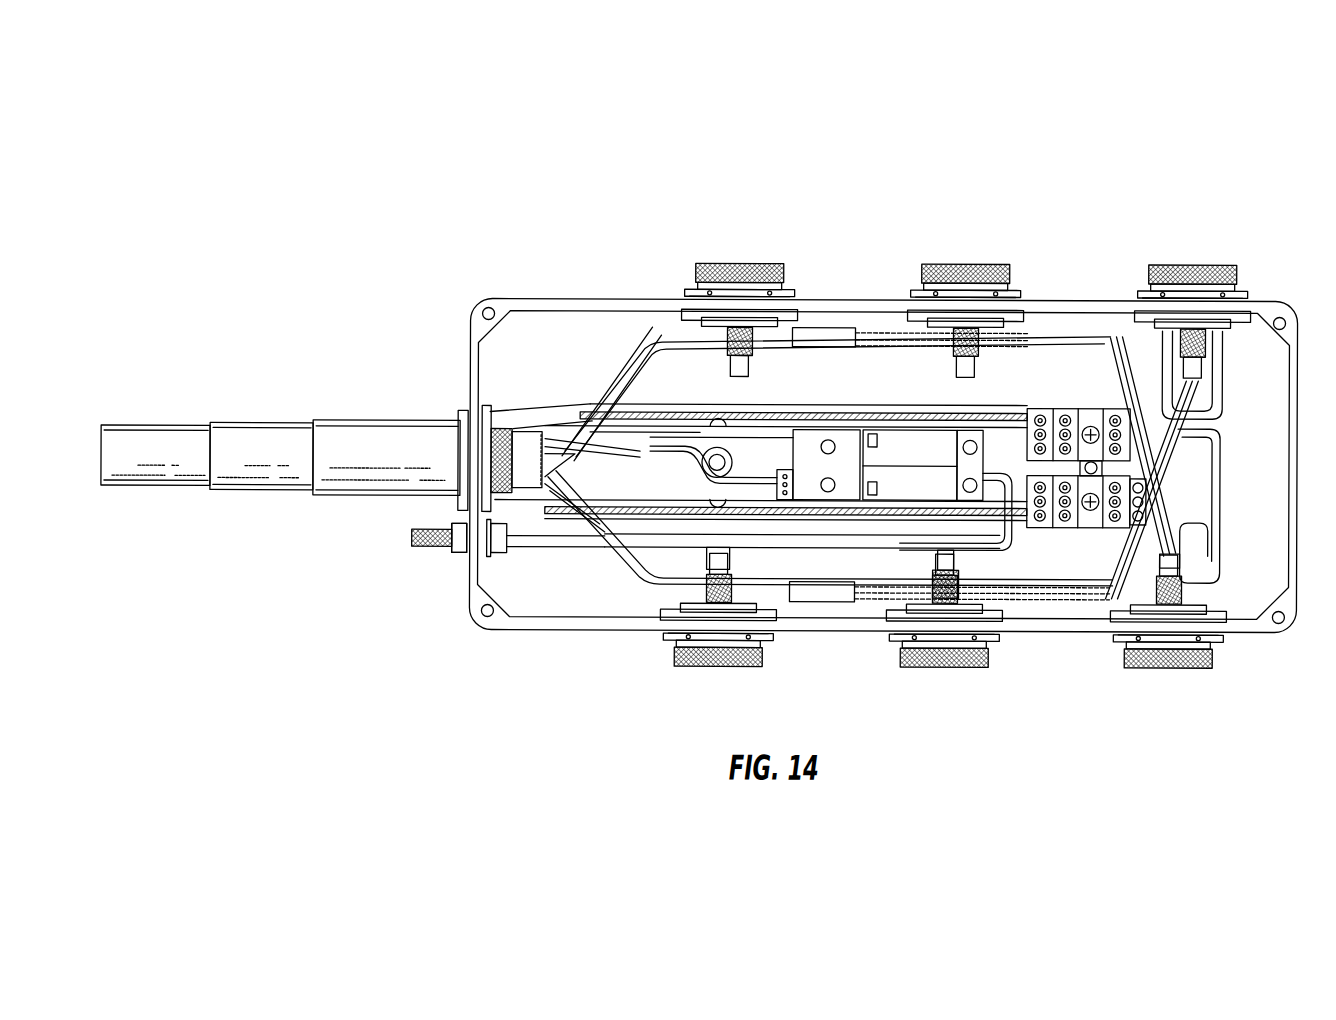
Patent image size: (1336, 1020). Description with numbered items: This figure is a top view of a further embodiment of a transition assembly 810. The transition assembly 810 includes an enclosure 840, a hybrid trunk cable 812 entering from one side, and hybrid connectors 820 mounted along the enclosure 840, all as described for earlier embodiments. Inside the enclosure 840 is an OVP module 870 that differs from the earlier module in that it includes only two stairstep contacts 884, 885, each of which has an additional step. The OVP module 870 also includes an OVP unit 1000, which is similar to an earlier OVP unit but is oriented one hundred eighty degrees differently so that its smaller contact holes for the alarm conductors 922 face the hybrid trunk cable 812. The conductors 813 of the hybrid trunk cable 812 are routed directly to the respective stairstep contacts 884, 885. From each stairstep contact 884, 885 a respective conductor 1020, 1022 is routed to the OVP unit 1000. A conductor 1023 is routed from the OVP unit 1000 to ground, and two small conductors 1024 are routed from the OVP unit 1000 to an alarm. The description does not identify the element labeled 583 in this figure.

The transition assembly 810 is at (1085, 184).
The hybrid trunk cable 812 is at (356, 438).
The conductors 813 is at (560, 532).
The hybrid connectors 820 is at (737, 262).
The enclosure 840 is at (848, 300).
The OVP module 870 is at (889, 364).
The stairstep contact 884 is at (1084, 408).
The stairstep contact 885 is at (1093, 528).
The alarm conductors 922 is at (643, 457).
The OVP unit 1000 is at (887, 510).
The conductor 1020 is at (1015, 405).
The conductor 1022 is at (1025, 522).
The conductor 1023 is at (623, 443).
The small conductors 1024 is at (533, 507).
The terminal post 583 is at (712, 522).